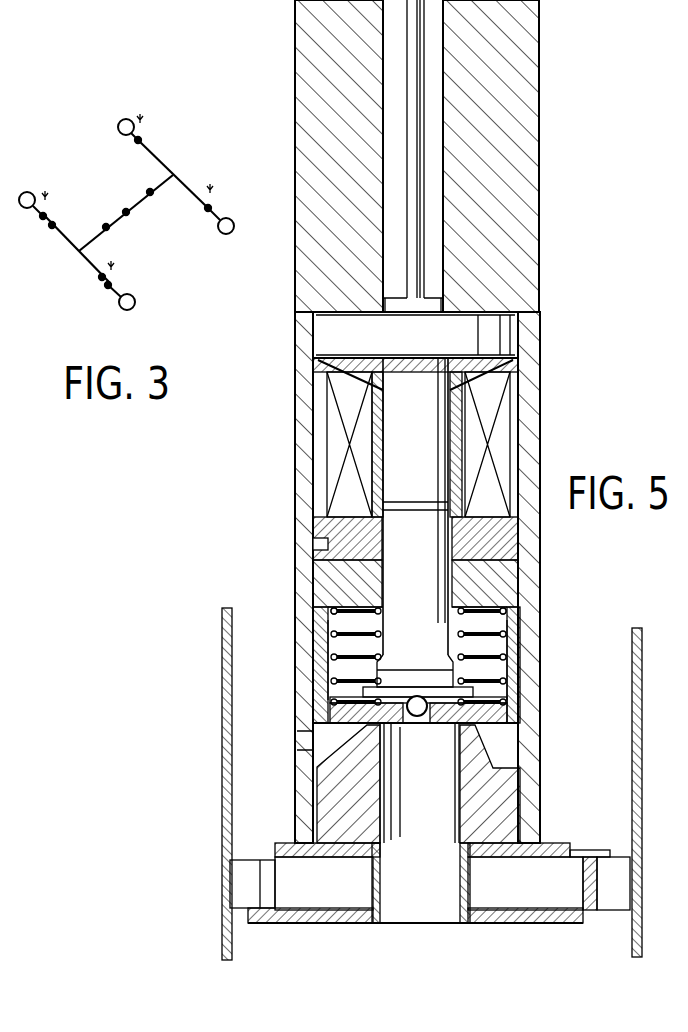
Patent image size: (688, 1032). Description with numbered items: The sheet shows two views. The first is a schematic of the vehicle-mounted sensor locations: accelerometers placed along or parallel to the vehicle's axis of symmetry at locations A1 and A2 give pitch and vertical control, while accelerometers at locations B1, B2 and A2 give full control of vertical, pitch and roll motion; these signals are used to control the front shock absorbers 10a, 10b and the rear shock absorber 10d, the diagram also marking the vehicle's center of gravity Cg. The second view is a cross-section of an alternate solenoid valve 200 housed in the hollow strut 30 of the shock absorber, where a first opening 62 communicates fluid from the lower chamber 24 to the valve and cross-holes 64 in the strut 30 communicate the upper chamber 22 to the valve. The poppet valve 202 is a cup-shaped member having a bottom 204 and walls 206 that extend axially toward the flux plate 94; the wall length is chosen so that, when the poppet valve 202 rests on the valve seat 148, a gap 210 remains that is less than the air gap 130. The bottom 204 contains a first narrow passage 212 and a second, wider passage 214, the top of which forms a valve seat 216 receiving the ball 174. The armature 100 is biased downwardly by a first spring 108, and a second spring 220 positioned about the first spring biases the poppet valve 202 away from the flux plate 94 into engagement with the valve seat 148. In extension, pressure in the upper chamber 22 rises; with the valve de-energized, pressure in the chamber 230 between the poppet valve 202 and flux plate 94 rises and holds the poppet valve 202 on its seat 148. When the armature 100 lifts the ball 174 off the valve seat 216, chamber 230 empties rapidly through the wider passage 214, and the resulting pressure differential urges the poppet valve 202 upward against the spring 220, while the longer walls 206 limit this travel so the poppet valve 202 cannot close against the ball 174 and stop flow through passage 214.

In FIG. 3, the front shock absorber 10a is at (47, 195).
In FIG. 3, the front shock absorber 10b is at (145, 118).
In FIG. 3, the rear shock absorber 10d is at (212, 188).
In FIG. 3, the accelerometer location A1 is at (108, 229).
In FIG. 3, the accelerometer location A2 is at (151, 194).
In FIG. 3, the accelerometer location B1 is at (50, 227).
In FIG. 3, the accelerometer location B2 is at (100, 280).
In FIG. 3, the center of gravity Cg is at (125, 210).
In FIG. 5, the strut 30 is at (527, 143).
In FIG. 5, the solenoid valve 200 is at (545, 450).
In FIG. 5, the flux plate 94 is at (510, 580).
In FIG. 5, the armature 100 is at (433, 570).
In FIG. 5, the air gap 130 is at (416, 490).
In FIG. 5, the poppet valve 202 is at (522, 664).
In FIG. 5, the second spring 220 is at (337, 660).
In FIG. 5, the gap 210 is at (322, 610).
In FIG. 5, the first spring 108 is at (507, 612).
In FIG. 5, the chamber 230 is at (507, 645).
In FIG. 5, the ball 174 is at (420, 697).
In FIG. 5, the bottom 204 is at (500, 725).
In FIG. 5, the walls 206 is at (522, 682).
In FIG. 5, the valve seat 216 is at (404, 726).
In FIG. 5, the second passage 214 is at (450, 742).
In FIG. 5, the valve seat 148 is at (480, 750).
In FIG. 5, the first narrow passage 212 is at (316, 747).
In FIG. 5, the first opening 62 is at (457, 907).
In FIG. 5, the cross-holes 64 is at (302, 742).
In FIG. 5, the upper chamber 22 is at (267, 809).
In FIG. 5, the lower chamber 24 is at (610, 952).